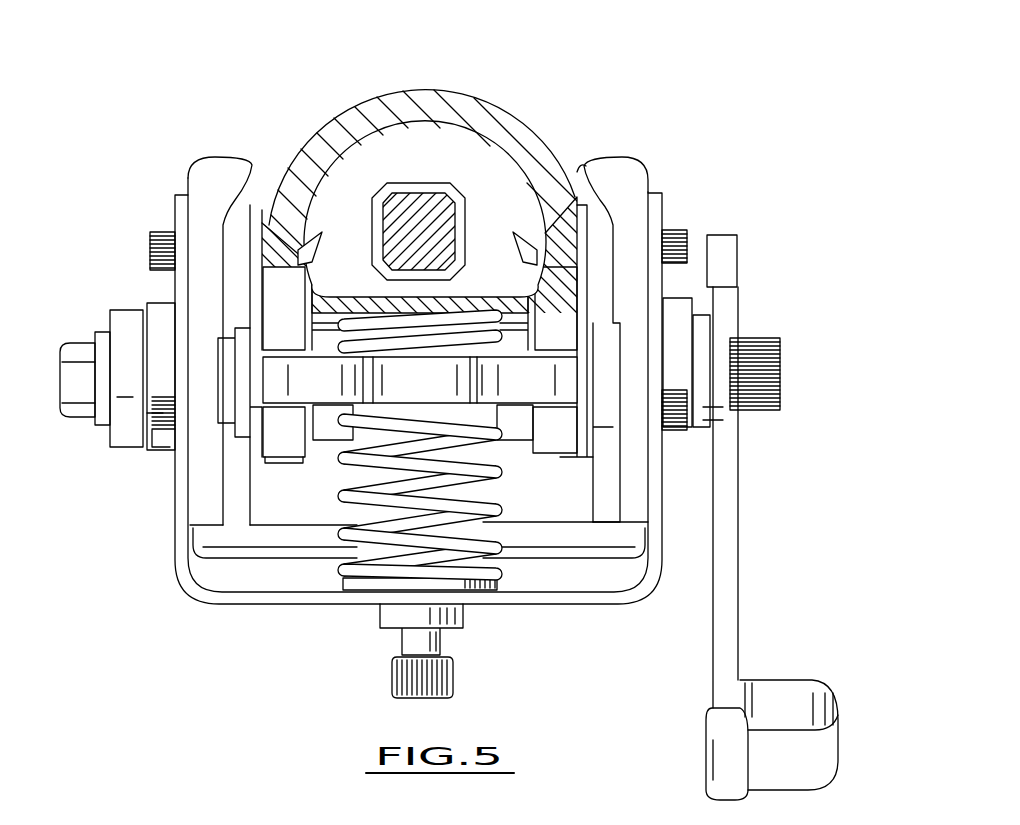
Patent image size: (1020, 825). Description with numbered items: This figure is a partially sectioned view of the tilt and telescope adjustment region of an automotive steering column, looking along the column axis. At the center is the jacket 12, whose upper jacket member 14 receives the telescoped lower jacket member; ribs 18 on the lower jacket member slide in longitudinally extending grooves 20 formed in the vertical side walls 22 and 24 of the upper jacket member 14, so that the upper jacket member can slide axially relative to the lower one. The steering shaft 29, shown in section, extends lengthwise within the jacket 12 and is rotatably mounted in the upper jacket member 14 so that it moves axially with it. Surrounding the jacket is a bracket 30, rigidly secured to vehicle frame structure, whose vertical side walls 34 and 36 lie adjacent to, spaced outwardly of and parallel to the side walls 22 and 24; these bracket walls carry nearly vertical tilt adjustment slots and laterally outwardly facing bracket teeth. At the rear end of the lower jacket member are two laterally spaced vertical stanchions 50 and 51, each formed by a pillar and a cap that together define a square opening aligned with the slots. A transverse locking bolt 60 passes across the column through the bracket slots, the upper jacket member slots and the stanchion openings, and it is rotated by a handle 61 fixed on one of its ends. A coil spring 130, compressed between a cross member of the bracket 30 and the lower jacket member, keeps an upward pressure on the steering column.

The jacket 12 is at (488, 92).
The upper jacket member 14 is at (512, 120).
The ribs 18 is at (297, 223).
The grooves 20 is at (310, 262).
The vertical side wall 22 is at (577, 210).
The vertical side wall 24 is at (265, 223).
The steering shaft 29 is at (413, 215).
The bracket 30 is at (205, 165).
The bracket side wall 34 is at (637, 233).
The bracket side wall 36 is at (200, 270).
The stanchion 50 is at (510, 437).
The stanchion 51 is at (332, 437).
The locking bolt 60 is at (760, 343).
The handle 61 is at (730, 563).
The coil spring 130 is at (497, 513).